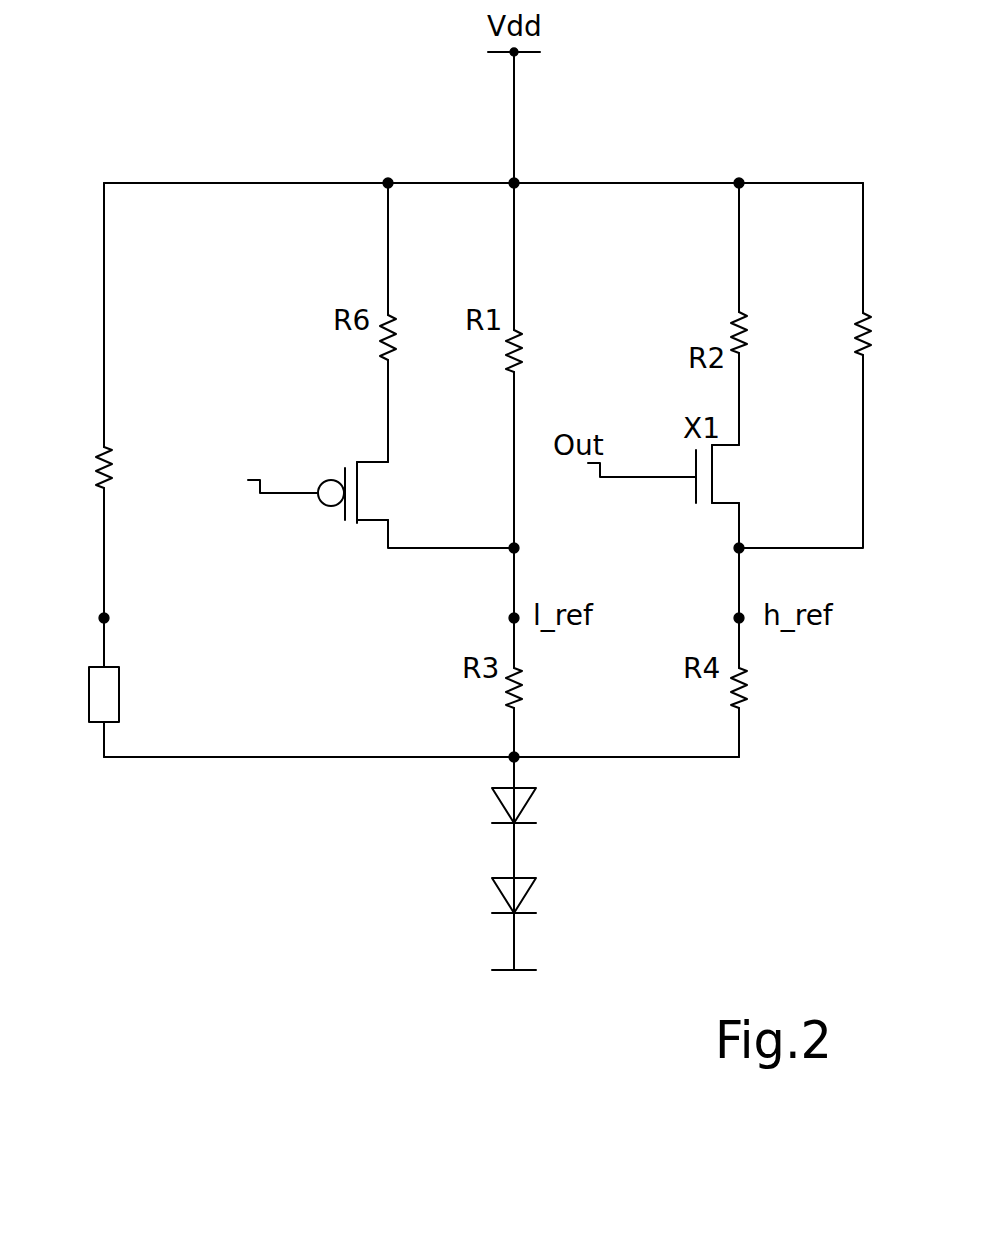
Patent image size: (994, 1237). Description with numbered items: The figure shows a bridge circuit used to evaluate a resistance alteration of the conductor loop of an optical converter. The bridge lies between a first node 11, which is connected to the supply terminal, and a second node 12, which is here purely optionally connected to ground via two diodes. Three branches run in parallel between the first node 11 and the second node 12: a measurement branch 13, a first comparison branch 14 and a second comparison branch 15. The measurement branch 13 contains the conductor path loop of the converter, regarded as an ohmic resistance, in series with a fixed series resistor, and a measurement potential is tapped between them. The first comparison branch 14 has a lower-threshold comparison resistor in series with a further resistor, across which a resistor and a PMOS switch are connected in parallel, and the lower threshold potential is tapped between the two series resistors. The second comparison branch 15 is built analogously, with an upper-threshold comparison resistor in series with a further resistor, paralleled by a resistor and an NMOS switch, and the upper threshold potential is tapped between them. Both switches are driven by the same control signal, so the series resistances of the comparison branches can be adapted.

The first node 11 is at (516, 181).
The second node 12 is at (516, 759).
The measurement branch 13 is at (73, 313).
The first comparison branch 14 is at (342, 378).
The second comparison branch 15 is at (888, 308).